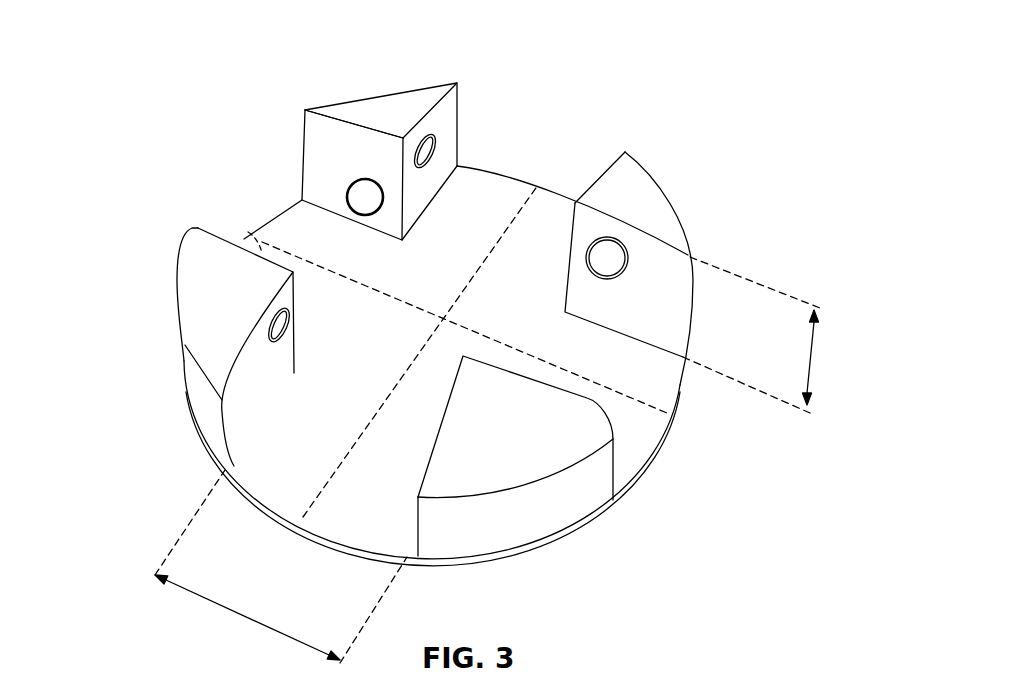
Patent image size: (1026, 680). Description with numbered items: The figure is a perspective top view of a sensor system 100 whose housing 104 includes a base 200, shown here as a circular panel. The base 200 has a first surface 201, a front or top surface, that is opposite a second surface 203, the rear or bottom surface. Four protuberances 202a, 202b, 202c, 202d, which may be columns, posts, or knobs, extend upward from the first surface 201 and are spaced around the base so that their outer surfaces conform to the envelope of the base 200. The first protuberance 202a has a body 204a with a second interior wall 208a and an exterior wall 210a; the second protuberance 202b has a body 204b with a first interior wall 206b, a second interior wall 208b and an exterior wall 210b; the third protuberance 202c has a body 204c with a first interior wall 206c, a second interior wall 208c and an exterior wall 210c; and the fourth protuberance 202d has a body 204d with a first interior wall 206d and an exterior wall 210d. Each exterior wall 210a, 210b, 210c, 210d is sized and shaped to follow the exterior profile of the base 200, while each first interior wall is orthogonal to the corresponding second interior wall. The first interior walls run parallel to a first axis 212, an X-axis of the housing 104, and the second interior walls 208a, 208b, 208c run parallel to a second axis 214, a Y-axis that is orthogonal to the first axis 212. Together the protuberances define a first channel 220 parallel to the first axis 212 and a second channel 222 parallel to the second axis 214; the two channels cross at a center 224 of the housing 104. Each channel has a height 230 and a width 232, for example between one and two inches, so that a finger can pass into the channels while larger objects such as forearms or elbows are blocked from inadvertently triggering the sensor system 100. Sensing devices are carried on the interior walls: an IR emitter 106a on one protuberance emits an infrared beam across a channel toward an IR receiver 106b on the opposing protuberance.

The sensor system 100 is at (126, 50).
The housing 104 is at (700, 331).
The IR emitter 106a is at (285, 176).
The IR receiver 106b is at (594, 245).
The base 200 is at (672, 412).
The first surface 201 is at (333, 505).
The first protuberance 202a is at (400, 85).
The second protuberance 202b is at (657, 178).
The third protuberance 202c is at (520, 497).
The fourth protuberance 202d is at (198, 350).
The second surface 203 is at (418, 560).
The body 204a is at (322, 120).
The body 204b is at (688, 203).
The body 204c is at (531, 494).
The body 204d is at (171, 347).
The first interior wall 206b is at (645, 306).
The first interior wall 206c is at (610, 418).
The first interior wall 206d is at (251, 215).
The second interior wall 208a is at (453, 103).
The second interior wall 208b is at (612, 182).
The second interior wall 208c is at (345, 555).
The exterior wall 210a is at (357, 92).
The exterior wall 210b is at (665, 205).
The exterior wall 210c is at (573, 477).
The exterior wall 210d is at (177, 314).
The first axis 212 is at (608, 393).
The second axis 214 is at (485, 263).
The first channel 220 is at (247, 212).
The second channel 222 is at (519, 136).
The center 224 is at (458, 265).
The height 230 is at (812, 362).
The width 232 is at (252, 620).